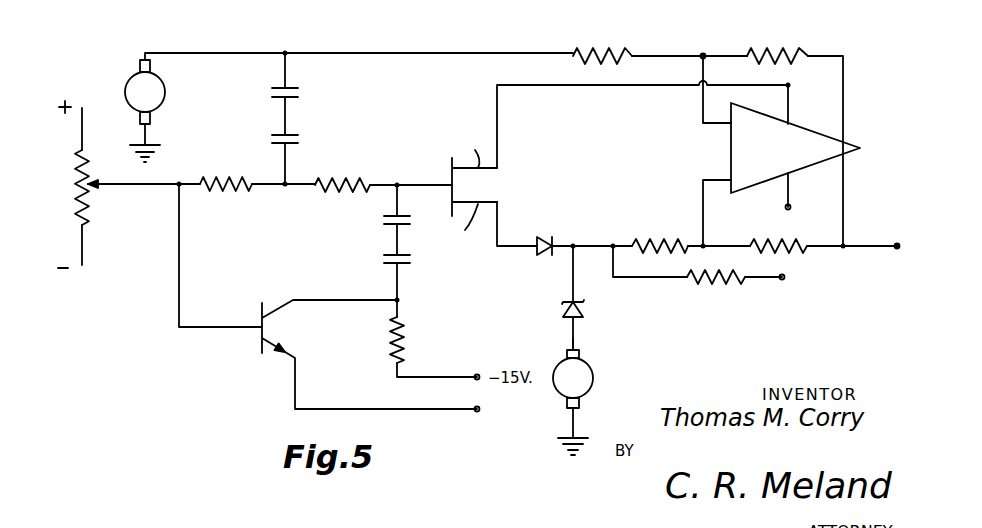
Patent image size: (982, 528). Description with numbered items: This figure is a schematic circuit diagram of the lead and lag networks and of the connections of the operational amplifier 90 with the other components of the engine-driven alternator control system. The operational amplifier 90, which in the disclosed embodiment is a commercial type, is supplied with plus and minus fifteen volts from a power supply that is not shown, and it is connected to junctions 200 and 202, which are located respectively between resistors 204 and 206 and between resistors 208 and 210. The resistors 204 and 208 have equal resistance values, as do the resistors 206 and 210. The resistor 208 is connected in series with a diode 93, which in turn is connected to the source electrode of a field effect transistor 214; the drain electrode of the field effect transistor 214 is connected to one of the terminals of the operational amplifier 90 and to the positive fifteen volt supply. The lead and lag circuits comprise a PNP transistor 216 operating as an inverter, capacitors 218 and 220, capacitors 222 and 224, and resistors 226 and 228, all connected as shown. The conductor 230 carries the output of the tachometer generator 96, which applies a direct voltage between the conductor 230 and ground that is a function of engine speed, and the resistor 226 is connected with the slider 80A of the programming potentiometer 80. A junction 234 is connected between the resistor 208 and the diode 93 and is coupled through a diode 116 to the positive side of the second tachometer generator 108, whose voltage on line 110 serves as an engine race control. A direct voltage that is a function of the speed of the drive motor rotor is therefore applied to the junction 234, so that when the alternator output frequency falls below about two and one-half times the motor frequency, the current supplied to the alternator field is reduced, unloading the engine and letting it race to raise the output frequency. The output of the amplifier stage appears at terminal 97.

The conductor 230 is at (356, 52).
The tachometer generator 96 is at (128, 88).
The programming potentiometer 80 is at (85, 205).
The slider 80A is at (92, 183).
The capacitor 222 is at (272, 90).
The capacitor 224 is at (272, 136).
The resistor 226 is at (232, 192).
The resistor 228 is at (333, 180).
The field effect transistor 214 is at (452, 172).
The capacitor 218 is at (384, 221).
The capacitor 220 is at (386, 262).
The transistor 216 is at (261, 348).
The diode 93 is at (543, 240).
The junction 234 is at (569, 250).
The diode 116 is at (562, 312).
The line 110 is at (575, 341).
The tachometer generator 108 is at (593, 376).
The resistor 204 is at (600, 52).
The junction 200 is at (703, 56).
The resistor 206 is at (800, 57).
The operational amplifier 90 is at (847, 142).
The output terminal 97 is at (897, 245).
The resistor 208 is at (645, 246).
The resistor 210 is at (763, 246).
The junction 202 is at (700, 246).